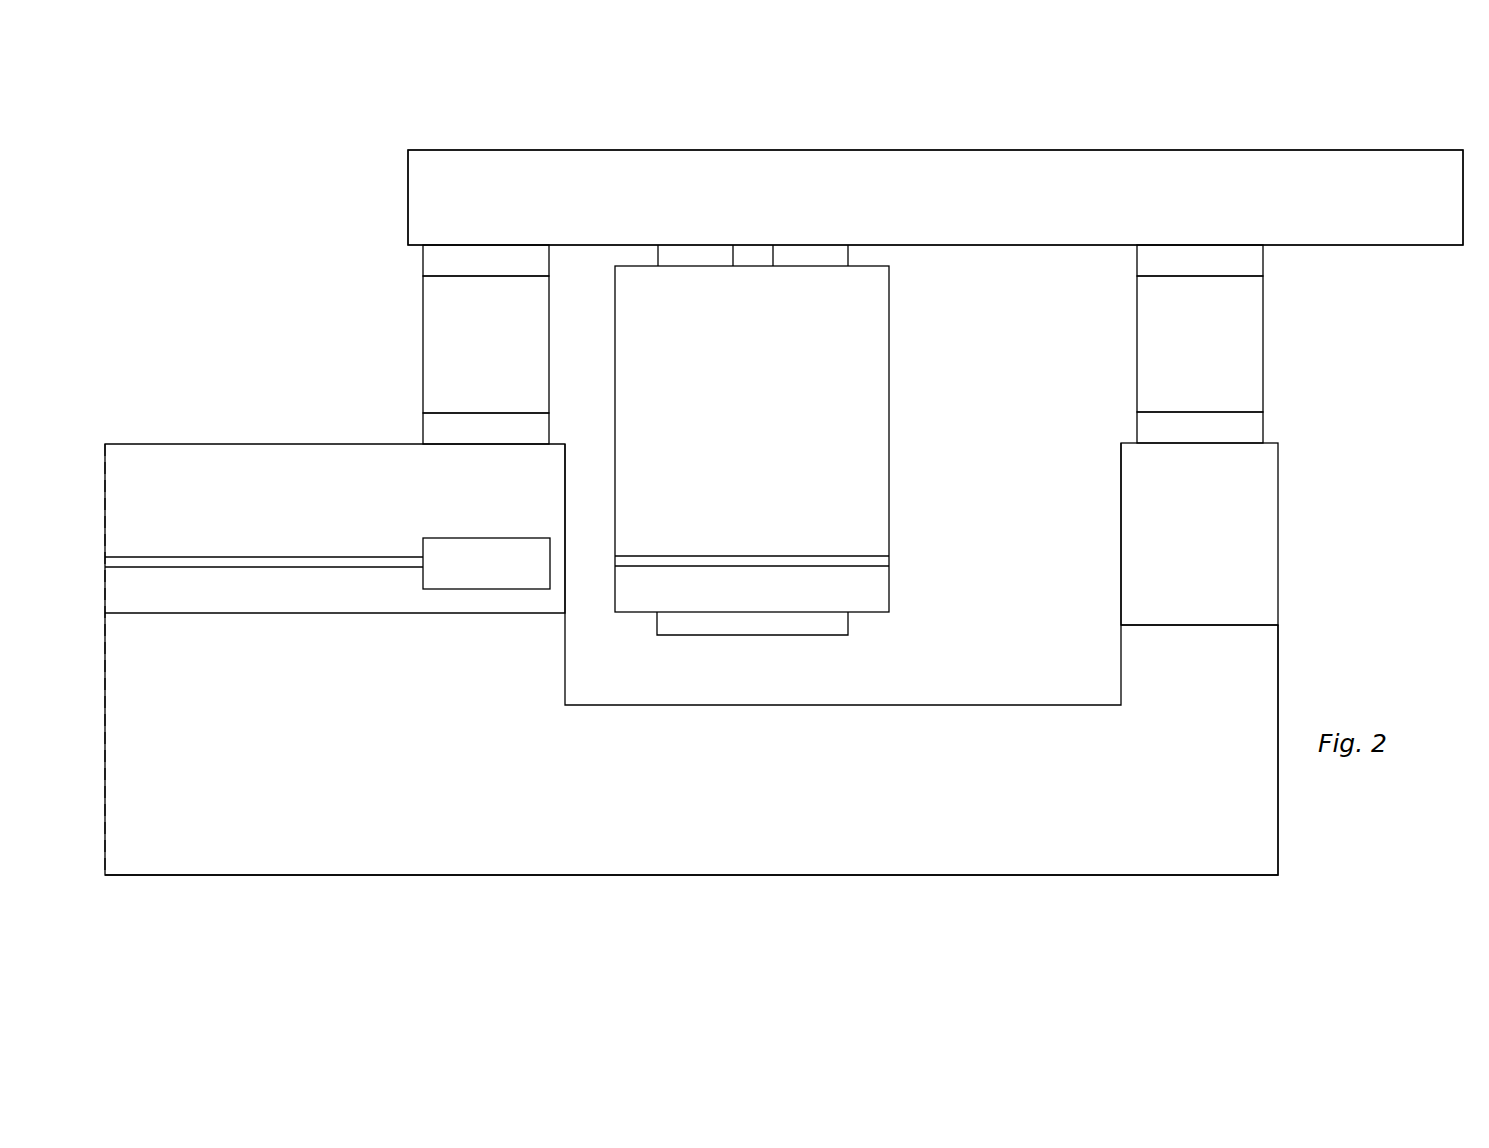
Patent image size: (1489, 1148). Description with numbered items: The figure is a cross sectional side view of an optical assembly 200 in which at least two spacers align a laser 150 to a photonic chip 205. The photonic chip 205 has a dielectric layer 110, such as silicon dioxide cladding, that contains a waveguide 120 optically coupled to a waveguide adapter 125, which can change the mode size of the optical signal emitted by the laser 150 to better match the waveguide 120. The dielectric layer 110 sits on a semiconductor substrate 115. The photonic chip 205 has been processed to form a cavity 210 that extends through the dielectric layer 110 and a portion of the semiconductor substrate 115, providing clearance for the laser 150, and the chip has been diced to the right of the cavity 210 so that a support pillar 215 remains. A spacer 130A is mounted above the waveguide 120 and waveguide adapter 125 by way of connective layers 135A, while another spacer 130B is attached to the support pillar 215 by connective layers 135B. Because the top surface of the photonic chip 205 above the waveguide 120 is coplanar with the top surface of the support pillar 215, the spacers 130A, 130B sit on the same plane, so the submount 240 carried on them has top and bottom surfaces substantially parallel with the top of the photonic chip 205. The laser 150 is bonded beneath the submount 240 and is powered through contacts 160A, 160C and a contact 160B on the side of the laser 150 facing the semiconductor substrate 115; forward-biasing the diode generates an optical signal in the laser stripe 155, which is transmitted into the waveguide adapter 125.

The optical assembly 200 is at (470, 77).
The submount 240 is at (422, 216).
The spacer 130A is at (432, 348).
The spacer 130B is at (1250, 350).
The connective layer 135A is at (432, 258).
The connective layer 135B is at (1250, 258).
The laser 150 is at (860, 334).
The laser stripe 155 is at (752, 556).
The contact 160A is at (676, 251).
The contact 160B is at (728, 628).
The contact 160C is at (832, 251).
The dielectric layer 110 is at (333, 598).
The waveguide 120 is at (383, 556).
The waveguide adapter 125 is at (468, 550).
The cavity 210 is at (1000, 505).
The support pillar 215 is at (1262, 508).
The semiconductor substrate 115 is at (595, 877).
The photonic chip 205 is at (1228, 895).